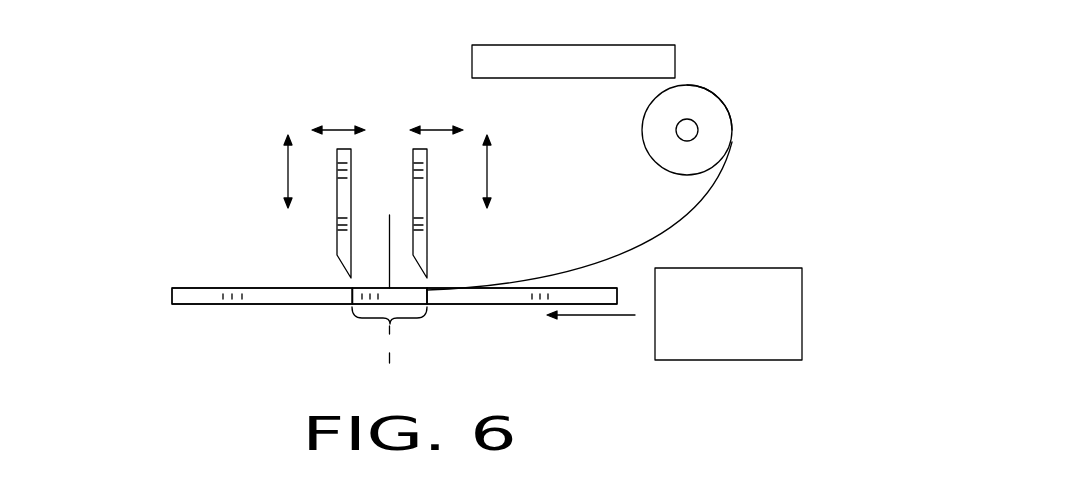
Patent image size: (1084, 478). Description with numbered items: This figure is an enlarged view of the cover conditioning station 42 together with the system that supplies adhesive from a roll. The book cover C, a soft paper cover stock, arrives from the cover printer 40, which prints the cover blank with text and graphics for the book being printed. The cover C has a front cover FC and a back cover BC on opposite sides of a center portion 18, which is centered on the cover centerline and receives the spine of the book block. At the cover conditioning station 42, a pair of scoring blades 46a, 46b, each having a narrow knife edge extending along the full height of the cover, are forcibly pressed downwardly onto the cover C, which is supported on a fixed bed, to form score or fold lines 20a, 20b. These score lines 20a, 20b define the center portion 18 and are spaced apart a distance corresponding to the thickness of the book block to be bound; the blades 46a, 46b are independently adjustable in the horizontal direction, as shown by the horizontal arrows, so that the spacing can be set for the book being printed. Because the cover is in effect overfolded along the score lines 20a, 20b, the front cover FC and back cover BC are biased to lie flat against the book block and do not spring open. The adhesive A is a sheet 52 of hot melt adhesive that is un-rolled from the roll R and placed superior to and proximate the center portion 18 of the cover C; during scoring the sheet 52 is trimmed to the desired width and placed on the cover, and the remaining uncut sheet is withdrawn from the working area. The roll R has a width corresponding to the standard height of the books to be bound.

The cover C is at (148, 304).
The front cover FC is at (271, 306).
The back cover BC is at (516, 306).
The center portion 18 is at (387, 326).
The score line 20a is at (350, 297).
The score line 20b is at (462, 306).
The cover conditioning station 42 is at (382, 139).
The scoring blade 46a is at (337, 188).
The scoring blade 46b is at (427, 200).
The roll of adhesive R is at (710, 79).
The adhesive A is at (742, 130).
The sheet of adhesive 52 is at (682, 217).
The cover printer 40 is at (821, 272).